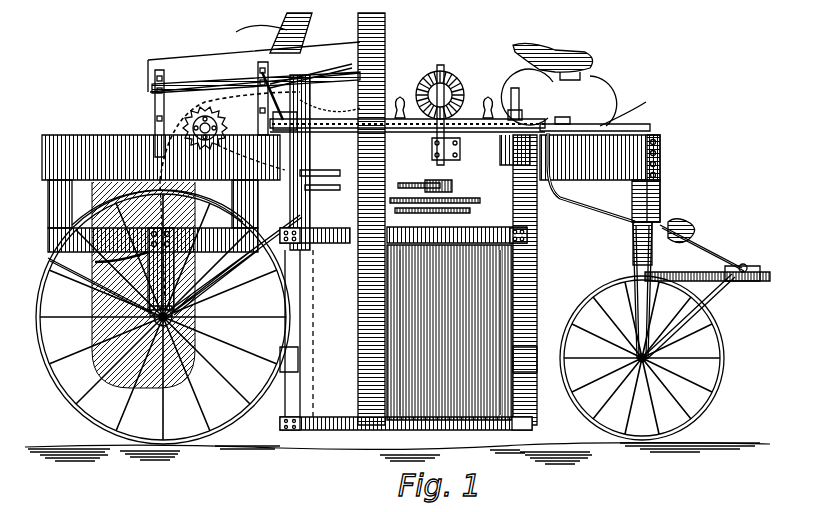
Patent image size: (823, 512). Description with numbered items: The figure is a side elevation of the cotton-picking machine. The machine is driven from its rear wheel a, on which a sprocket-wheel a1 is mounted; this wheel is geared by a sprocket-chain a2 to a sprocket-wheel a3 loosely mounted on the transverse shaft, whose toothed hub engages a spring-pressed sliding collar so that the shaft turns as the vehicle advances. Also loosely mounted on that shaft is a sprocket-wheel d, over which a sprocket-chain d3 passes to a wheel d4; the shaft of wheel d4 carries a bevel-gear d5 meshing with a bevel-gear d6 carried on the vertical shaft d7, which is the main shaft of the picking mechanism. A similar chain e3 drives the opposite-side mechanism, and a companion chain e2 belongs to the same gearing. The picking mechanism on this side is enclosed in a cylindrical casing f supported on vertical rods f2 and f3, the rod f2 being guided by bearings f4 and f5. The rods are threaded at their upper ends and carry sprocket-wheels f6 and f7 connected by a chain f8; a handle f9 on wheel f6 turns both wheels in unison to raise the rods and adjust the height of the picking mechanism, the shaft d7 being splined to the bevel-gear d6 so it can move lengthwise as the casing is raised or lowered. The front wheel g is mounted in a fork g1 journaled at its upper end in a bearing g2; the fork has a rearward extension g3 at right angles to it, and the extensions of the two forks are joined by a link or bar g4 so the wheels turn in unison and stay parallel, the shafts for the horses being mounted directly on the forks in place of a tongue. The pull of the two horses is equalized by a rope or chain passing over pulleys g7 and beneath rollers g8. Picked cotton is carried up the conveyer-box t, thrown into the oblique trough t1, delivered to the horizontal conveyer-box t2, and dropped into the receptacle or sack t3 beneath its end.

The rear wheel a is at (222, 378).
The sprocket-wheel a1 is at (195, 365).
The sprocket-chain a2 is at (228, 200).
The sprocket-wheel a3 is at (222, 120).
The sprocket-wheel d is at (155, 108).
The sprocket-chain d3 is at (440, 70).
The sprocket-wheel d4 is at (395, 100).
The bevel-gear d5 is at (512, 88).
The bevel-gear d6 is at (487, 100).
The vertical shaft d7 is at (450, 190).
The chain e2 is at (330, 101).
The chain e3 is at (311, 123).
The cylindrical casing f is at (589, 178).
The vertical rod f2 is at (540, 288).
The vertical rod f3 is at (290, 397).
The bearing f4 is at (522, 372).
The bearing f5 is at (498, 151).
The sprocket-wheel f6 is at (595, 116).
The sprocket-wheel f7 is at (436, 137).
The chain f8 is at (454, 146).
The handle f9 is at (558, 84).
The front wheel g is at (725, 338).
The fork g1 is at (650, 258).
The bearing g2 is at (662, 204).
The extension g3 is at (632, 109).
The link or bar g4 is at (571, 113).
The pulley g7 is at (695, 232).
The roller g8 is at (745, 264).
The conveyer-box t is at (301, 33).
The oblique trough t1 is at (280, 38).
The horizontal conveyer-box t2 is at (254, 67).
The receptacle or sack t3 is at (95, 266).